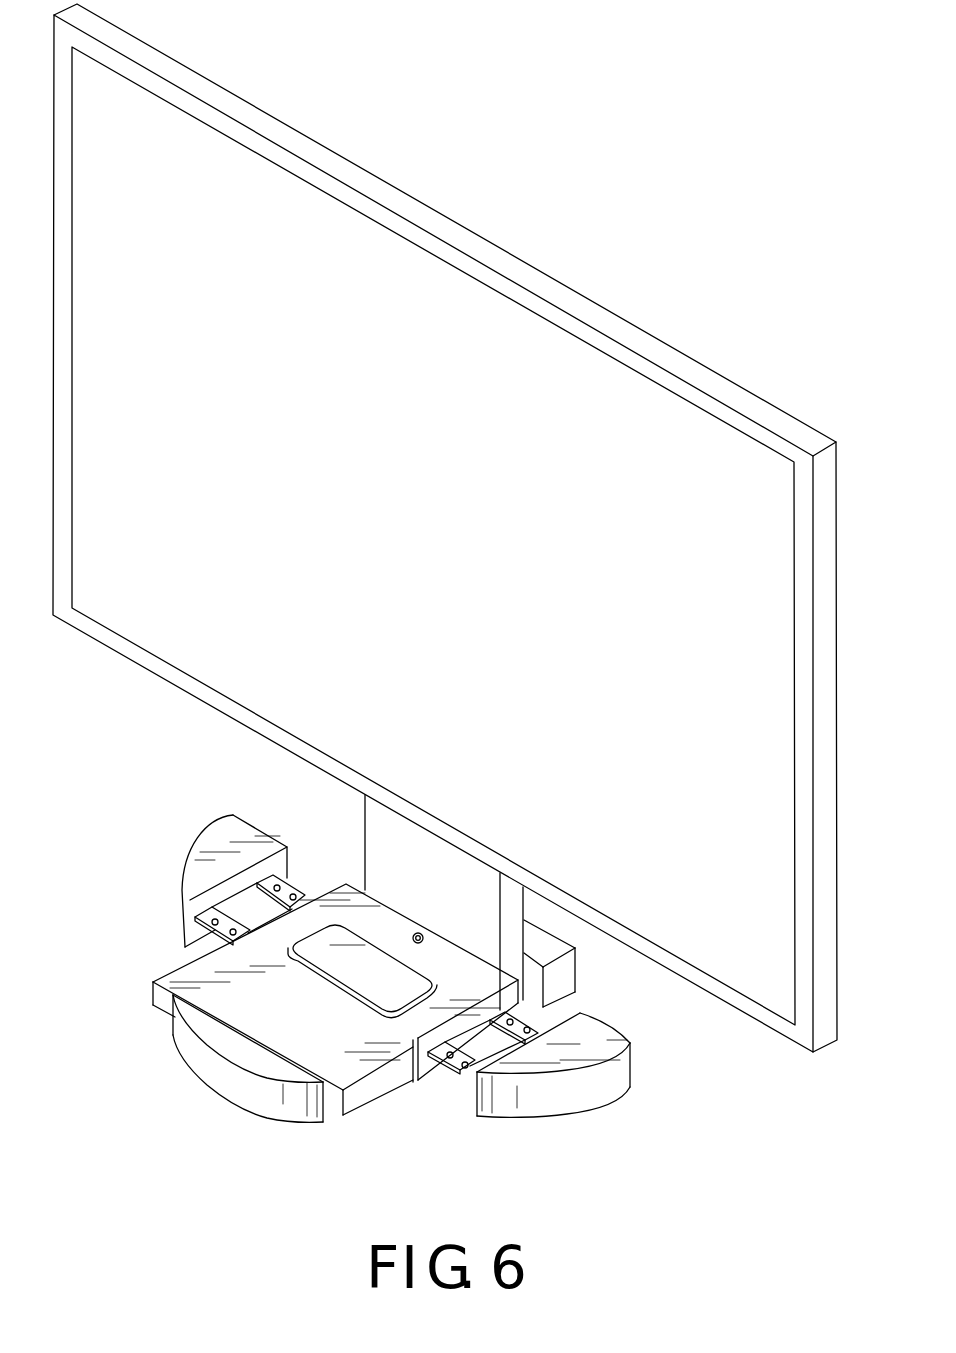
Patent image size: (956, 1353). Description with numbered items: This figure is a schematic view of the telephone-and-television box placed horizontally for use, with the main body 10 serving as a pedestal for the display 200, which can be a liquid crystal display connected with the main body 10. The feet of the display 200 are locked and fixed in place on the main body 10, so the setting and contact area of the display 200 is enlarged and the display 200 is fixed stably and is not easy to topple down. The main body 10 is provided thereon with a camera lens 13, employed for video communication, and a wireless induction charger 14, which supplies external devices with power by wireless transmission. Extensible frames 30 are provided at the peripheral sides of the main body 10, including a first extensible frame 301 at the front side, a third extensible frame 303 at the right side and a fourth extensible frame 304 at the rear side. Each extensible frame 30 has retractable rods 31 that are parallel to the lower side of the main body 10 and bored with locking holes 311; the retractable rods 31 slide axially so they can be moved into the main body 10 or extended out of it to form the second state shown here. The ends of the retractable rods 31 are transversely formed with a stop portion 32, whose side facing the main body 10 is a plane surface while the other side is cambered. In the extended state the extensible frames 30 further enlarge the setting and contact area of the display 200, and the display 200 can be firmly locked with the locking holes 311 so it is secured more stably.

The display 200 is at (460, 214).
The extensible frame 30 is at (404, 1002).
The stop portion 32 is at (197, 873).
The retractable rod 31 is at (195, 917).
The locking hole 311 is at (230, 932).
The first extensible frame 301 is at (183, 1035).
The wireless induction charger 14 is at (310, 980).
The main body 10 is at (423, 1092).
The camera lens 13 is at (425, 938).
The fourth extensible frame 304 is at (567, 977).
The third extensible frame 303 is at (567, 1088).